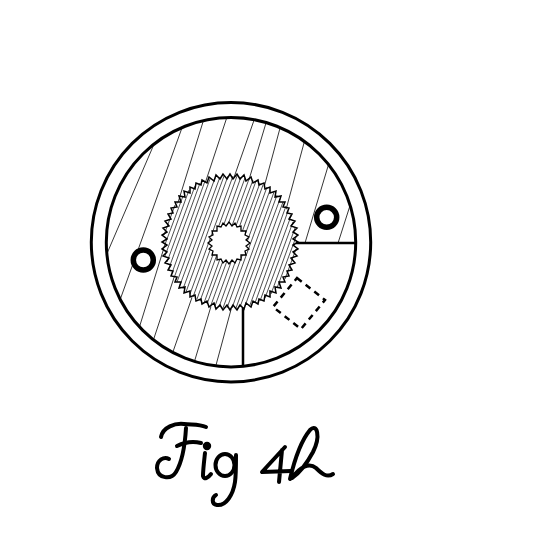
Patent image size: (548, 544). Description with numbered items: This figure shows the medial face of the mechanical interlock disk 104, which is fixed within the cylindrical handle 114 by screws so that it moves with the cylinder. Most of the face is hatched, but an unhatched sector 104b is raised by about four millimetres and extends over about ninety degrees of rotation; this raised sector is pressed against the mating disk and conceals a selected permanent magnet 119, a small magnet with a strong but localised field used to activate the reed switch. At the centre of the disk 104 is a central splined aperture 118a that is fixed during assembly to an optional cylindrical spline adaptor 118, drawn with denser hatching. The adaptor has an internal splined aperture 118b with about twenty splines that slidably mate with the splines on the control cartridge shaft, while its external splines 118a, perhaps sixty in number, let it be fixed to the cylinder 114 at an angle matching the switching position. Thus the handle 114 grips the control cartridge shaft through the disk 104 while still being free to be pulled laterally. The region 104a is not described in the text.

The disk 104 is at (187, 67).
The first housing portion 104a is at (120, 190).
The unhatched sector 104b is at (339, 268).
The cylindrical handle 114 is at (246, 101).
The cylindrical spline adaptor 118 is at (241, 200).
The central splined aperture 118a is at (168, 276).
The internal splined aperture 118b is at (227, 246).
The permanent magnet 119 is at (300, 328).